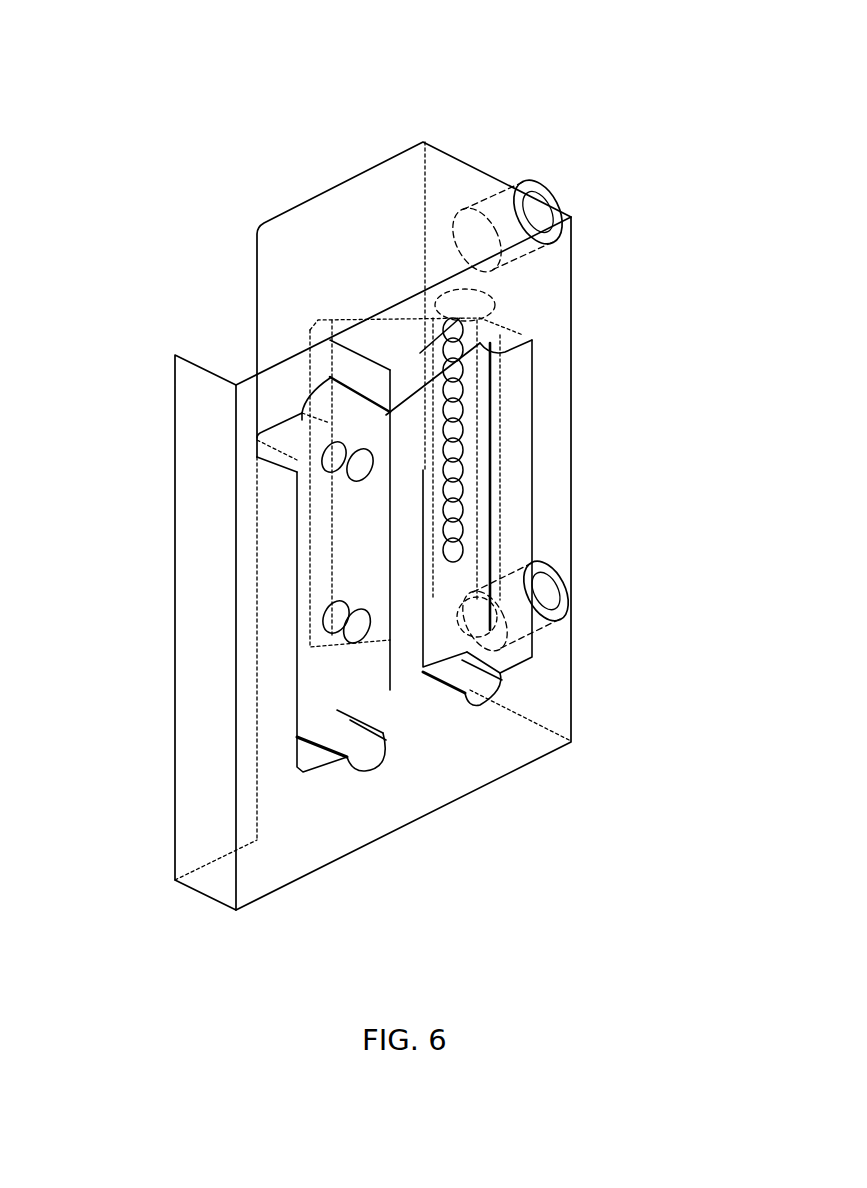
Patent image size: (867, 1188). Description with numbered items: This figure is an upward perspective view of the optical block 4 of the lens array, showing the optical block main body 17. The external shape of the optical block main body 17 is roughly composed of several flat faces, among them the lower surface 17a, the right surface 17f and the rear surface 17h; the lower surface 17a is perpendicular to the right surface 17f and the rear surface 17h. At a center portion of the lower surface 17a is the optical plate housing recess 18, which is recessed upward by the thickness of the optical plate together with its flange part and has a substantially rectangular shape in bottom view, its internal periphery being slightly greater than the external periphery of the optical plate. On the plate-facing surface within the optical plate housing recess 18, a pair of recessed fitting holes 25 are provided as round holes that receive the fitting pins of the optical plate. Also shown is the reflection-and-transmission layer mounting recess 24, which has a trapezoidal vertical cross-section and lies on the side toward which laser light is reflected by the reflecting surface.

The optical block 4 is at (156, 142).
The optical block main body 17 is at (366, 170).
The rear surface 17h is at (293, 267).
The right surface 17f is at (200, 646).
The lower surface 17a is at (440, 765).
The optical plate housing recess 18 is at (328, 681).
The reflection-and-transmission layer mounting recess 24 is at (390, 638).
The fitting holes 25 is at (340, 478).